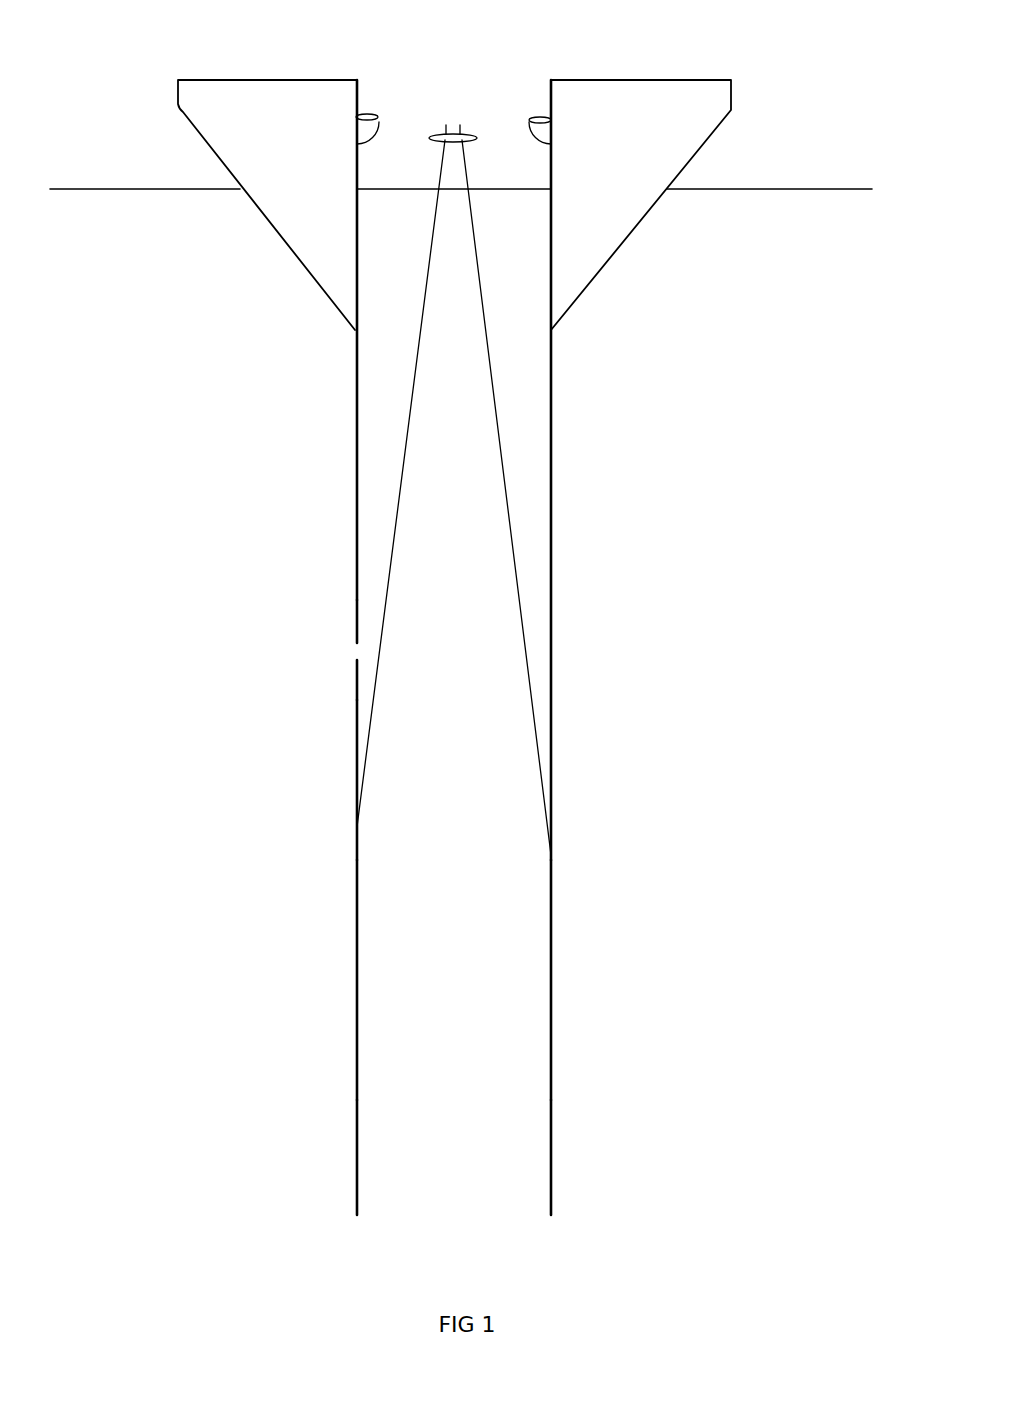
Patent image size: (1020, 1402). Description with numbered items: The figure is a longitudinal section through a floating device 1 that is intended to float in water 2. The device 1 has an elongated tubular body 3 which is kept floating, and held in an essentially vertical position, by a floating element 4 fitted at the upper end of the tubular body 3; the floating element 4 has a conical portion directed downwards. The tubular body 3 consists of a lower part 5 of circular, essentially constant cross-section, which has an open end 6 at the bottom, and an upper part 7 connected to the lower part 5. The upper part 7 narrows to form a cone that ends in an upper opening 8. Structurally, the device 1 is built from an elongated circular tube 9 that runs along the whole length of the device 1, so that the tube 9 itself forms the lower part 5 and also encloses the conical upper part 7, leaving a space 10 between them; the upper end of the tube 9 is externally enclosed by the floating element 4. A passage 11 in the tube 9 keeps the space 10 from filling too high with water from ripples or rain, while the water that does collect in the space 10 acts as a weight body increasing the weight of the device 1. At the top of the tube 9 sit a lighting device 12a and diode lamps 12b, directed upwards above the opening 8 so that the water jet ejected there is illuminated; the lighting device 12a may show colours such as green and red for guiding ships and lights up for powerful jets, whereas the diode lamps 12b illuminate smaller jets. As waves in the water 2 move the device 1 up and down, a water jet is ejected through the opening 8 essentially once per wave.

The floating device 1 is at (265, 421).
The water 2 is at (778, 238).
The tubular body 3 is at (528, 497).
The floating element 4 is at (220, 117).
The lower part 5 is at (525, 1048).
The open end 6 is at (461, 1210).
The upper part 7 is at (518, 597).
The upper opening 8 is at (452, 125).
The tube 9 is at (357, 559).
The space 10 is at (530, 380).
The passage 11 is at (357, 650).
The lighting device 12a is at (363, 115).
The diode lamps 12b is at (462, 135).